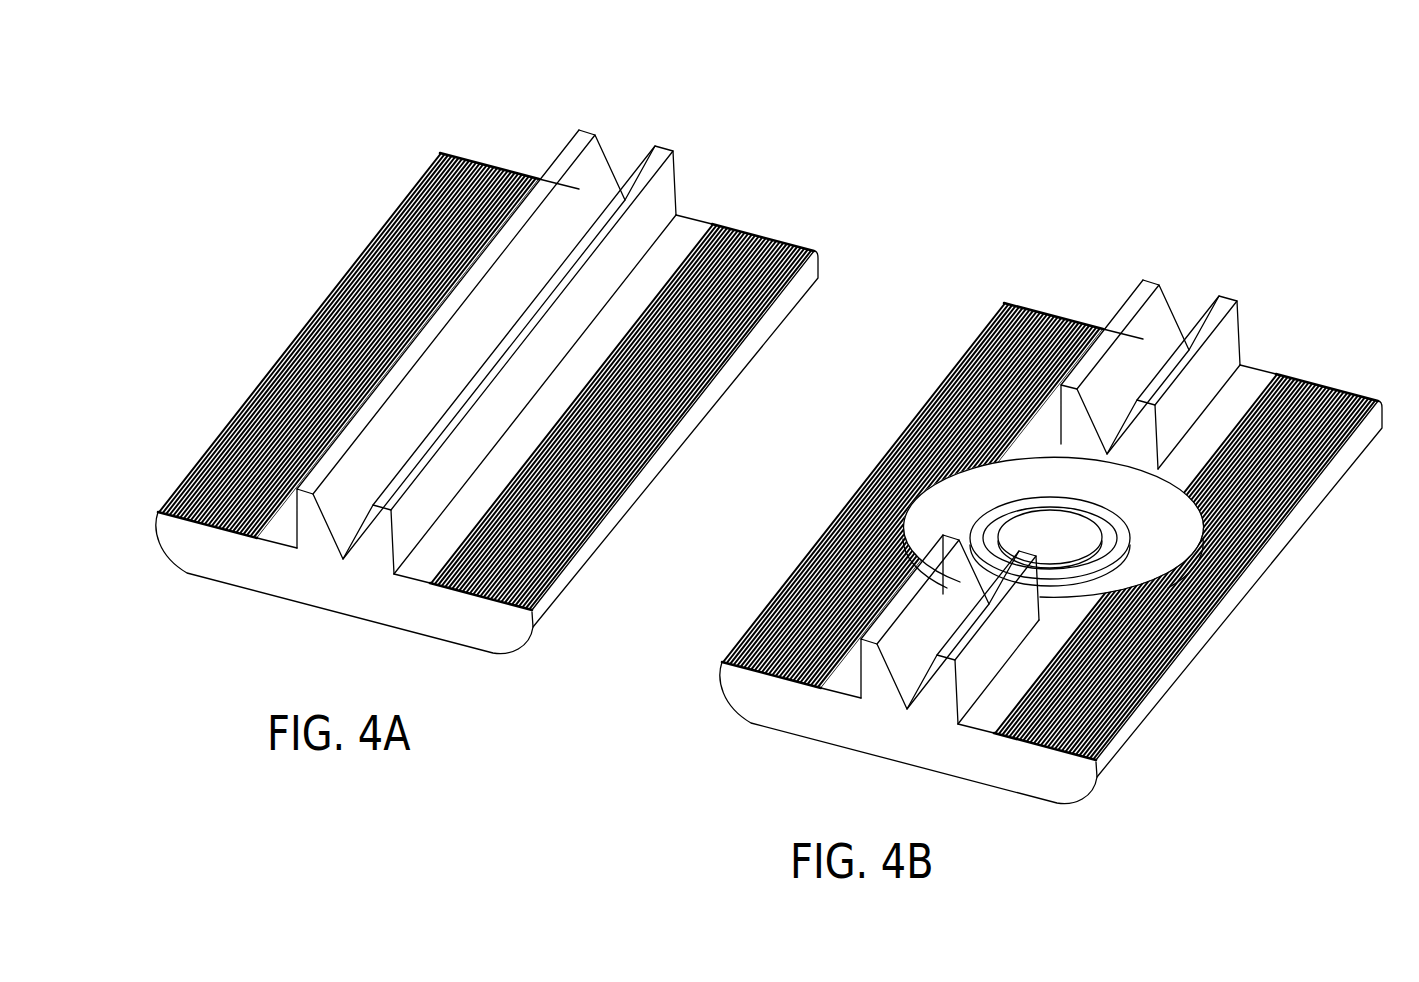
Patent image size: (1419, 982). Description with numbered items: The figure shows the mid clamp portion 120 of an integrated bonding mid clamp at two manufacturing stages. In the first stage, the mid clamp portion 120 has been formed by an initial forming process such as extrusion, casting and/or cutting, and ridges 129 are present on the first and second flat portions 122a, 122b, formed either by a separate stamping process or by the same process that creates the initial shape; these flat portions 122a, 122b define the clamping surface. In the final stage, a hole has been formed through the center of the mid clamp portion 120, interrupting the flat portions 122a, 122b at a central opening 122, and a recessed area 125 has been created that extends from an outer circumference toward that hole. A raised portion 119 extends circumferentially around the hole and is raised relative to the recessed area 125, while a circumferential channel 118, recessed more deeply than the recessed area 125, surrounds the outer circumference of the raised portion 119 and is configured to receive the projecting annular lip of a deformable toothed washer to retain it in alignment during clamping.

In FIG. 4A, the mid clamp portion 120 is at (397, 127).
In FIG. 4B, the mid clamp portion 120 is at (995, 250).
In FIG. 4A, the ridges 129 is at (469, 381).
In FIG. 4B, the ridges 129 is at (1050, 505).
In FIG. 4A, the first flat portion 122a is at (212, 480).
In FIG. 4B, the first flat portion 122a is at (927, 449).
In FIG. 4A, the second flat portion 122b is at (545, 551).
In FIG. 4B, the second flat portion 122b is at (1270, 503).
In FIG. 4B, the central opening 122 is at (1160, 507).
In FIG. 4B, the recessed area 125 is at (1175, 557).
In FIG. 4B, the circumferential channel 118 is at (1194, 586).
In FIG. 4B, the raised portion 119 is at (1037, 552).